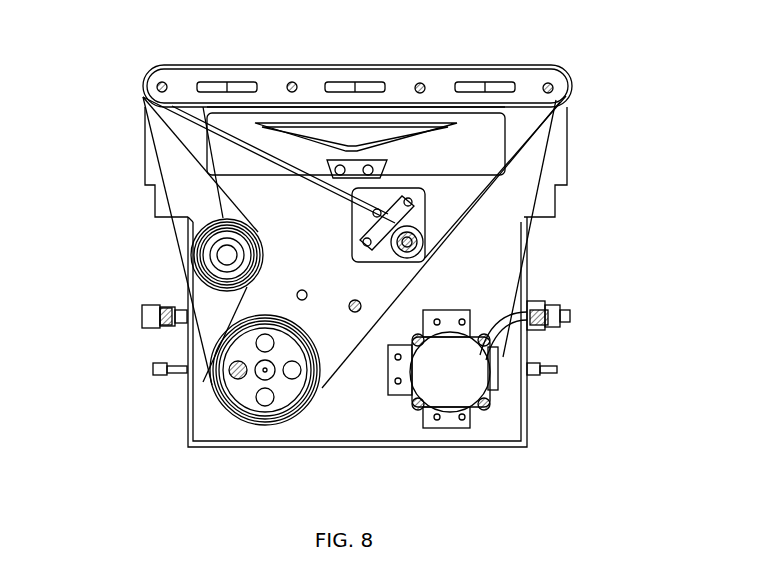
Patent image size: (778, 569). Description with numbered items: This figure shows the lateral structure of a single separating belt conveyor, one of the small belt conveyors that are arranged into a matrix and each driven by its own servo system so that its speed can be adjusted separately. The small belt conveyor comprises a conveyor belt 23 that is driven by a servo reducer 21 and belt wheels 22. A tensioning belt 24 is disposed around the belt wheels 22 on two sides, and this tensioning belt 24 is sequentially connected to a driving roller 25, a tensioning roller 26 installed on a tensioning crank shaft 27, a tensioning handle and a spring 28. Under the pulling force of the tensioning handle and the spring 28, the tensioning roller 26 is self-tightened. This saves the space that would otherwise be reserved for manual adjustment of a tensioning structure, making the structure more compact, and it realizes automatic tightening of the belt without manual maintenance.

The servo reducer 21 is at (570, 308).
The belt wheels 22 is at (558, 68).
The conveyor belt 23 is at (282, 67).
The tensioning belt 24 is at (395, 293).
The driving roller 25 is at (243, 390).
The tensioning roller 26 is at (178, 305).
The tensioning crank shaft 27 is at (207, 252).
The spring 28 is at (385, 232).